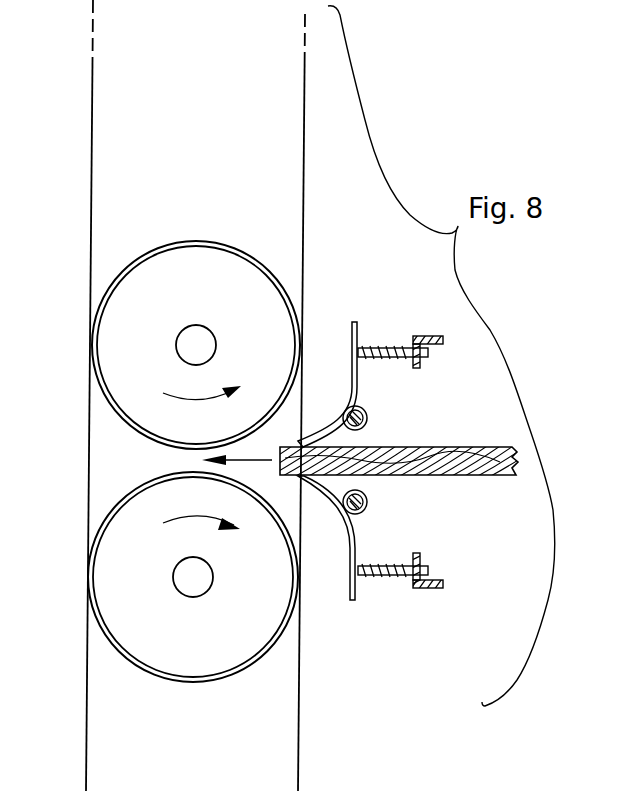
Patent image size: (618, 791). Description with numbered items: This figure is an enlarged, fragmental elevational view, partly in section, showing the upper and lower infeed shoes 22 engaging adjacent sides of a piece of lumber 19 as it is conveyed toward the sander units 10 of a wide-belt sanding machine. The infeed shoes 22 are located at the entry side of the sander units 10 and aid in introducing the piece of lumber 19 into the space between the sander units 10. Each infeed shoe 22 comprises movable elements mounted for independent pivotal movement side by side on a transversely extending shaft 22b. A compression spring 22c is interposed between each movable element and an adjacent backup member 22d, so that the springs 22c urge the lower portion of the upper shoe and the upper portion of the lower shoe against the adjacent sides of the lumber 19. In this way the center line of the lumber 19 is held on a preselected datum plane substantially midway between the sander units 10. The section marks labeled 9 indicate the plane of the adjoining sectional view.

The sander unit 10 is at (130, 322).
The segmented infeed shoe 22 is at (353, 322).
The transversely extending shaft 22b is at (368, 418).
The compression spring 22c is at (383, 343).
The backup member 22d is at (438, 342).
The piece of lumber 19 is at (477, 469).
The section line for FIG. 9 is at (578, 147).